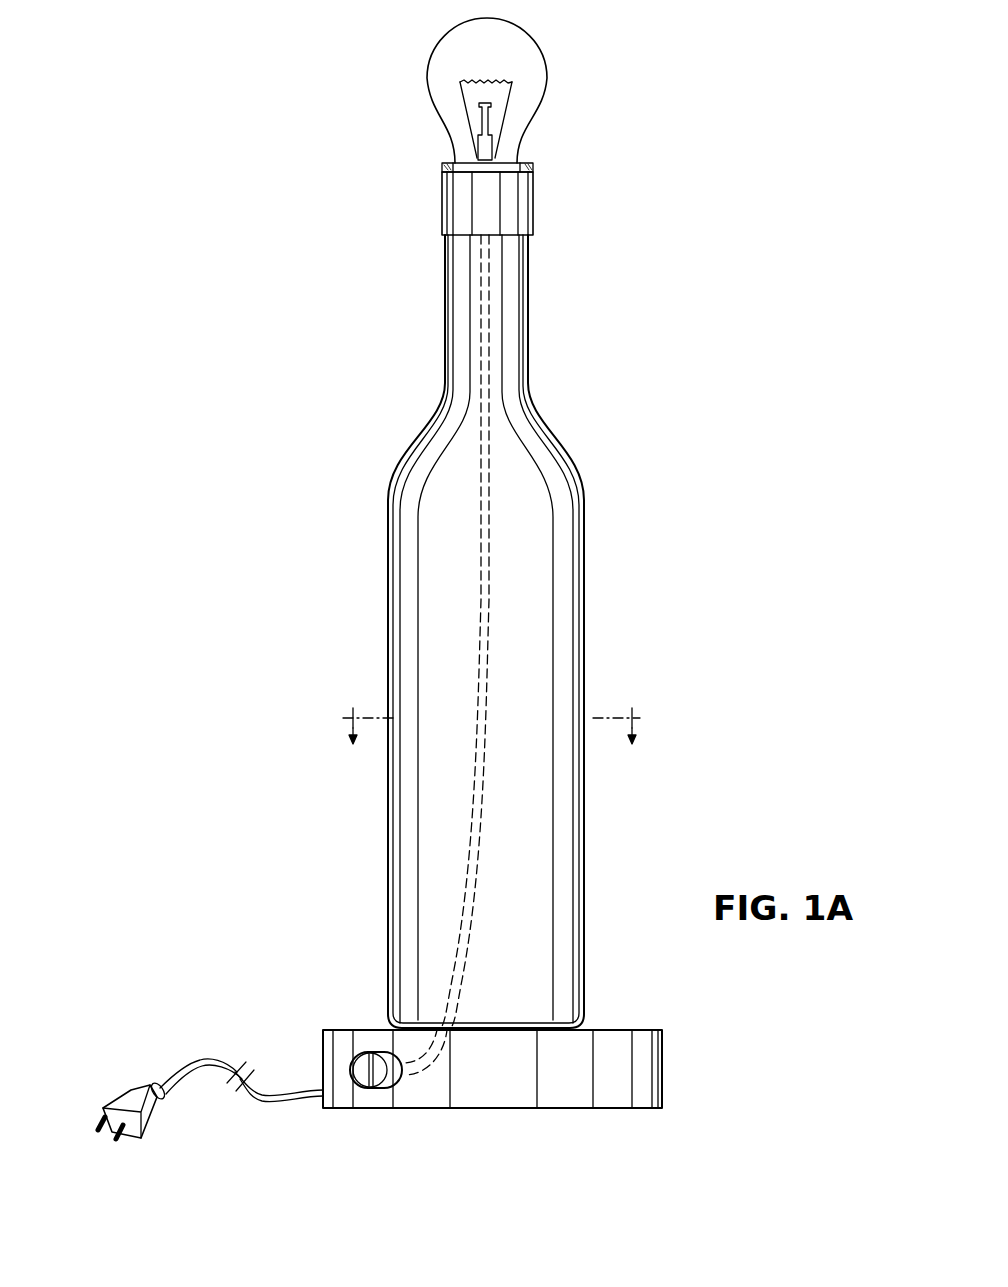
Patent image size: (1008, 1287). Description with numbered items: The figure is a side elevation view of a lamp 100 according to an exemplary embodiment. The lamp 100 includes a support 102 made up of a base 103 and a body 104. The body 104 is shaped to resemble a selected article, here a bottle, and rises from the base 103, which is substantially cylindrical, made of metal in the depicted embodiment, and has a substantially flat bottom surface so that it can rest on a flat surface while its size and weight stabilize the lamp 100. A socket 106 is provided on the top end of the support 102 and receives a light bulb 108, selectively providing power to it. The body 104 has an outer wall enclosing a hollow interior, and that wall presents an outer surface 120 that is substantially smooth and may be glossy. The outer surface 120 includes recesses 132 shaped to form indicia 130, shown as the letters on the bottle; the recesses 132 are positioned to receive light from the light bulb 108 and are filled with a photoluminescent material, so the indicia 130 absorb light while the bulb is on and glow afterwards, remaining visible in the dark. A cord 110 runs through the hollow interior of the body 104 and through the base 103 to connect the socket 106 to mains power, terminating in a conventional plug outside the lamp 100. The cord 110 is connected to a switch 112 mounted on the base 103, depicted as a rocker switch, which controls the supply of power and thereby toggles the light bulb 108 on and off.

The lamp 100 is at (308, 128).
The support 102 is at (361, 529).
The base 103 is at (642, 1030).
The body 104 is at (550, 557).
The socket 106 is at (525, 205).
The light bulb 108 is at (528, 52).
The cord 110 is at (467, 838).
The switch 112 is at (363, 1060).
The outer surface 120 is at (408, 623).
The indicia 130 is at (553, 678).
The recesses 132 is at (563, 703).